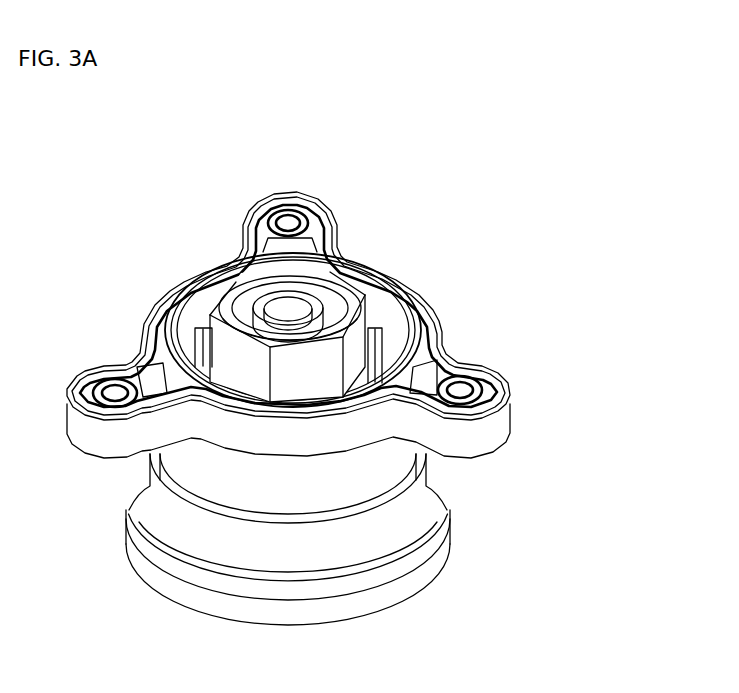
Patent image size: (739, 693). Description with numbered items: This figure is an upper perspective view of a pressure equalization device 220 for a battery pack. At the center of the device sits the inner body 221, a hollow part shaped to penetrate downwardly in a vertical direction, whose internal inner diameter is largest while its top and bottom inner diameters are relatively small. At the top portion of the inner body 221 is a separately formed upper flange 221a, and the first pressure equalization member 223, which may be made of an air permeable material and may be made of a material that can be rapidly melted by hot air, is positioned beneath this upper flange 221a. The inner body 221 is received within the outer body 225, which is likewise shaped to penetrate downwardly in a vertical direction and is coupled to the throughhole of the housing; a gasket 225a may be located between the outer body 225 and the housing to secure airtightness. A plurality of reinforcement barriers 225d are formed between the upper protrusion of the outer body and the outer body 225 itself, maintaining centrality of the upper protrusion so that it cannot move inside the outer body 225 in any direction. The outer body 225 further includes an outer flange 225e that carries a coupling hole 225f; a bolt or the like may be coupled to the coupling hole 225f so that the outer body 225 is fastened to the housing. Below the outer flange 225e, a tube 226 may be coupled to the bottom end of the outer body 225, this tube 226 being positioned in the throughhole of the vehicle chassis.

The pressure equalization device 220 is at (380, 180).
The inner body 221 is at (240, 353).
The upper flange 221a is at (247, 310).
The first pressure equalization member 223 is at (287, 315).
The outer body 225 is at (387, 475).
The gasket 225a is at (432, 293).
The reinforcement barriers 225d is at (373, 323).
The outer flange 225e is at (498, 418).
The coupling hole 225f is at (462, 390).
The tube 226 is at (380, 538).